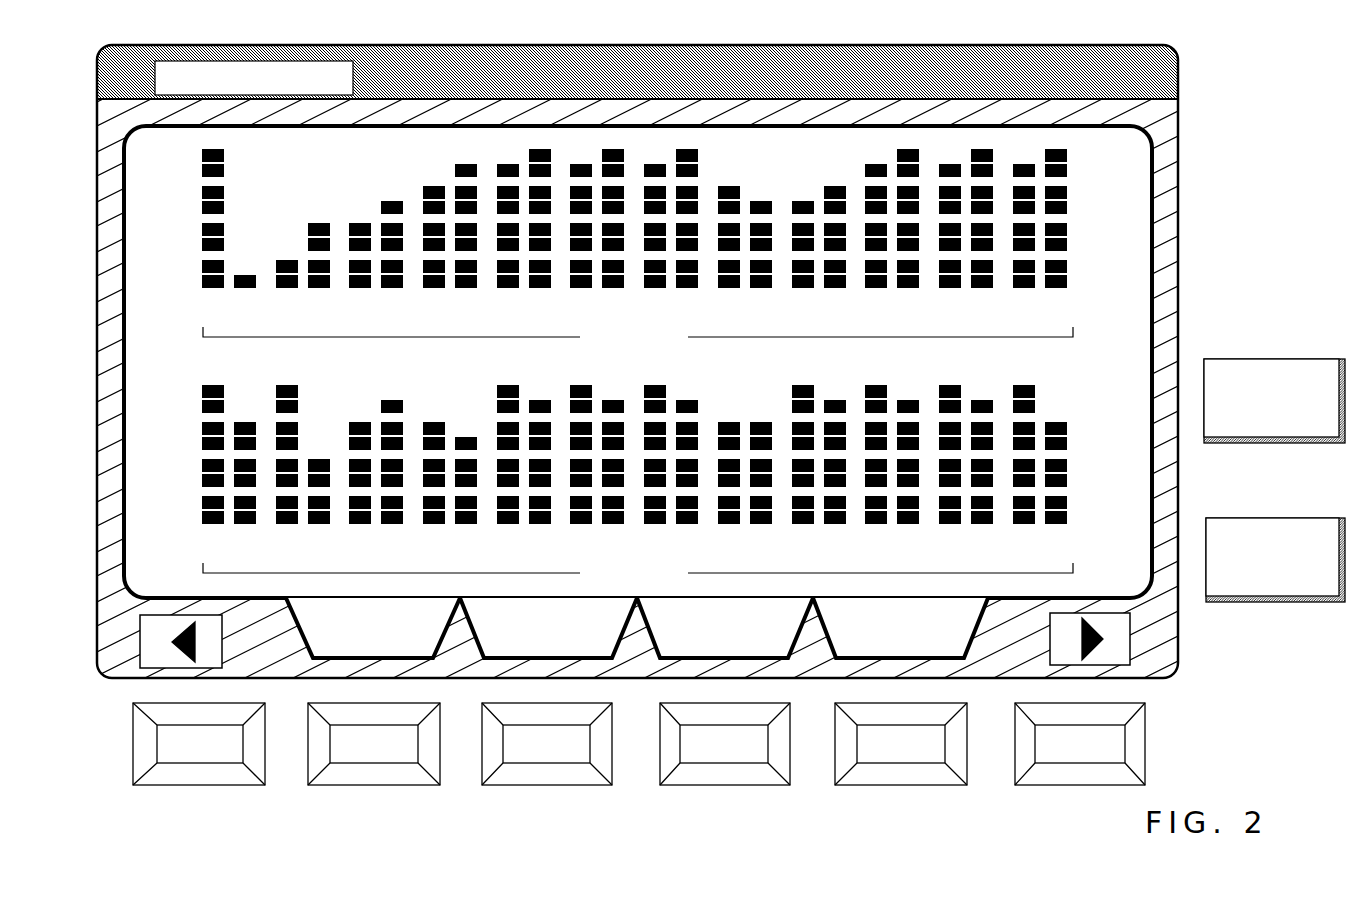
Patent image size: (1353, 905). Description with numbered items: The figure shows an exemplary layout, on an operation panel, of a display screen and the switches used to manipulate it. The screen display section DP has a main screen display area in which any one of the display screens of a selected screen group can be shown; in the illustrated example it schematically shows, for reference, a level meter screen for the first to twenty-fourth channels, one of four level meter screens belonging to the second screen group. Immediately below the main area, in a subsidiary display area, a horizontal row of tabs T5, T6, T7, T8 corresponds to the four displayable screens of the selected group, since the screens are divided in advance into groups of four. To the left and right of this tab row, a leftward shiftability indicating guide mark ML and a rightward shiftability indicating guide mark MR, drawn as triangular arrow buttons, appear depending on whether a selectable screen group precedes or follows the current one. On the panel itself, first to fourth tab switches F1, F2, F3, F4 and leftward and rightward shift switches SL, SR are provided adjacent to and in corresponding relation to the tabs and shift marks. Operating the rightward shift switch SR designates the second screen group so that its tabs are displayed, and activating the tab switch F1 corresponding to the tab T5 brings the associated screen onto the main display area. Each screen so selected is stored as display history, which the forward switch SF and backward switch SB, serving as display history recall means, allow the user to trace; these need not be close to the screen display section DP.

The screen display section DP is at (1178, 72).
The forward switch SF is at (1298, 359).
The backward switch SB is at (1298, 518).
The leftward shiftability indicating guide mark ML is at (222, 645).
The rightward shiftability indicating guide mark MR is at (1130, 640).
The tab T5 is at (417, 660).
The tab T6 is at (595, 662).
The tab T7 is at (775, 662).
The tab T8 is at (957, 662).
The leftward shift switch SL is at (168, 785).
The rightward shift switch SR is at (1052, 785).
The first tab switch F1 is at (335, 785).
The second tab switch F2 is at (520, 785).
The third tab switch F3 is at (695, 785).
The fourth tab switch F4 is at (880, 785).